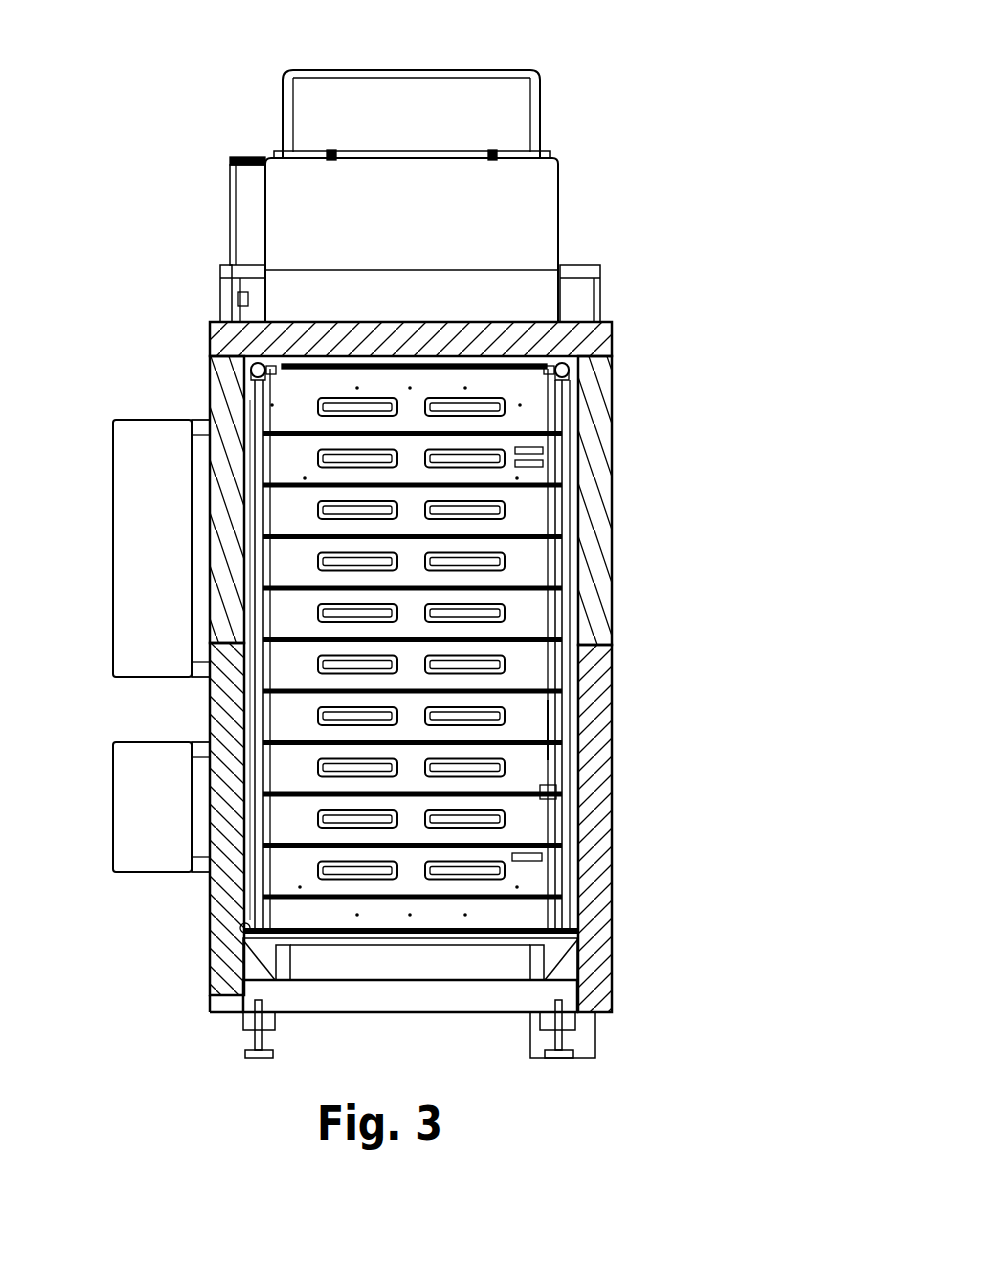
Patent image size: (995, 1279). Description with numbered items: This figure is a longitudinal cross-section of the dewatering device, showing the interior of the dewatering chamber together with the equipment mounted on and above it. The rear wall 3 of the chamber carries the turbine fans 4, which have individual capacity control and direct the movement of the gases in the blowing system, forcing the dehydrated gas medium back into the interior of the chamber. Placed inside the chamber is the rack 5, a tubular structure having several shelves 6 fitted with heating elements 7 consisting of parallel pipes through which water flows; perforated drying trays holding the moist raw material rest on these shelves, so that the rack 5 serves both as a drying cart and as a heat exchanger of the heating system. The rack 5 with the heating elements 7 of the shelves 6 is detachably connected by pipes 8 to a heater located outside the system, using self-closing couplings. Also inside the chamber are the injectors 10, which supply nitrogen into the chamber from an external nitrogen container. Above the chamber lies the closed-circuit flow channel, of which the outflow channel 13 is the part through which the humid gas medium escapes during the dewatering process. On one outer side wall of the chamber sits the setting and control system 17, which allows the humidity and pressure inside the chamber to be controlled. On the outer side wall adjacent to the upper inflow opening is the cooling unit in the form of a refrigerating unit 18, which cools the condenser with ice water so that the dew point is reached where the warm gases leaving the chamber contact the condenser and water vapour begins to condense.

The rear wall 3 is at (538, 402).
The turbine fans 4 is at (482, 608).
The rack 5 is at (562, 685).
The shelves 6 is at (528, 737).
The heating elements 7 is at (538, 793).
The pipes 8 is at (250, 379).
The injectors 10 is at (240, 930).
The outflow channel 13 is at (517, 216).
The setting and control system 17 is at (137, 523).
The refrigerating unit 18 is at (483, 100).